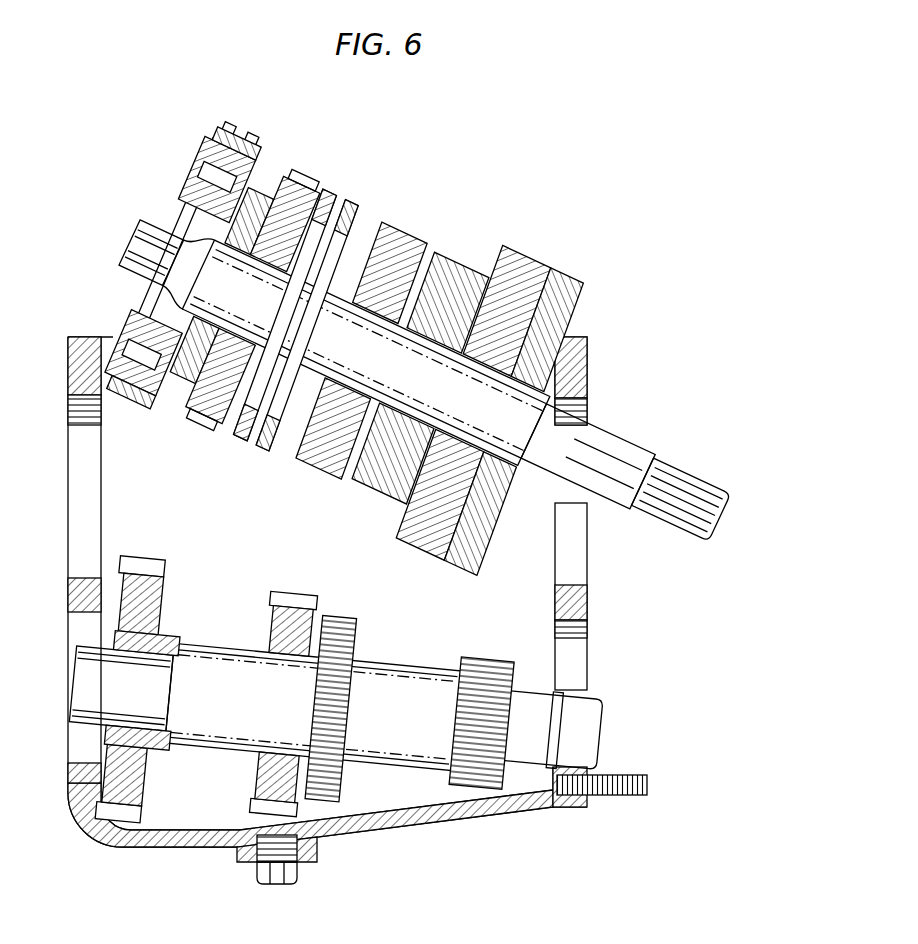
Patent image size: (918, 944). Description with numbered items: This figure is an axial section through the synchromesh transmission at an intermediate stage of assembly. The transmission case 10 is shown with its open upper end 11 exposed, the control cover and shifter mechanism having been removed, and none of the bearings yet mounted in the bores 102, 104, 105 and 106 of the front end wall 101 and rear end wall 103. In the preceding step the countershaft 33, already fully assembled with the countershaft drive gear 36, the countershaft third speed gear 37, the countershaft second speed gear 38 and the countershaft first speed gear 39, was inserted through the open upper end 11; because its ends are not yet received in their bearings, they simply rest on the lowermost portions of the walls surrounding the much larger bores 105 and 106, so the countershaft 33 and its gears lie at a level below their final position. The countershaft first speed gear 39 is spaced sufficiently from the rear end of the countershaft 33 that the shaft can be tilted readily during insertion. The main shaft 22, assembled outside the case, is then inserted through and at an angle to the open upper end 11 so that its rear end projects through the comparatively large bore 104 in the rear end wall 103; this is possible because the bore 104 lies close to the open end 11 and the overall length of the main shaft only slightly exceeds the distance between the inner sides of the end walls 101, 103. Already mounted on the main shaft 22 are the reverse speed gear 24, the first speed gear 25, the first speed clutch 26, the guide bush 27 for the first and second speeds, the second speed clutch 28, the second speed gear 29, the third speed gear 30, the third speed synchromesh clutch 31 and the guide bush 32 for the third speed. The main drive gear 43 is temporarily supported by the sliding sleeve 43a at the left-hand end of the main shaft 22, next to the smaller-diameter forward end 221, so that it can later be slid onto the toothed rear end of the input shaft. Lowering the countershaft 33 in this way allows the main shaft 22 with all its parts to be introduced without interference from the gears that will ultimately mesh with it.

The transmission case 10 is at (480, 806).
The open upper end 11 is at (84, 338).
The main shaft 22 is at (540, 462).
The reverse speed gear 24 is at (449, 551).
The first speed gear 25 is at (395, 513).
The first speed clutch 26 is at (470, 265).
The guide bush for the first and second speeds 27 is at (311, 461).
The second speed clutch 28 is at (396, 236).
The second speed gear 29 is at (359, 219).
The third speed gear 30 is at (328, 232).
The third speed synchromesh clutch 31 is at (295, 210).
The guide bush for the third speed 32 is at (165, 386).
The countershaft 33 is at (386, 694).
The countershaft drive gear 36 is at (146, 568).
The countershaft third speed gear 37 is at (292, 598).
The countershaft second speed gear 38 is at (338, 623).
The countershaft first speed gear 39 is at (487, 662).
The main drive gear 43 is at (222, 162).
The sliding sleeve 43a is at (247, 153).
The end wall 101 is at (76, 594).
The bore 102 is at (80, 398).
The rear end wall 103 is at (582, 596).
The bore 104 is at (582, 410).
The bore 105 is at (70, 778).
The bore 106 is at (590, 784).
The forward end of the main shaft 221 is at (146, 246).